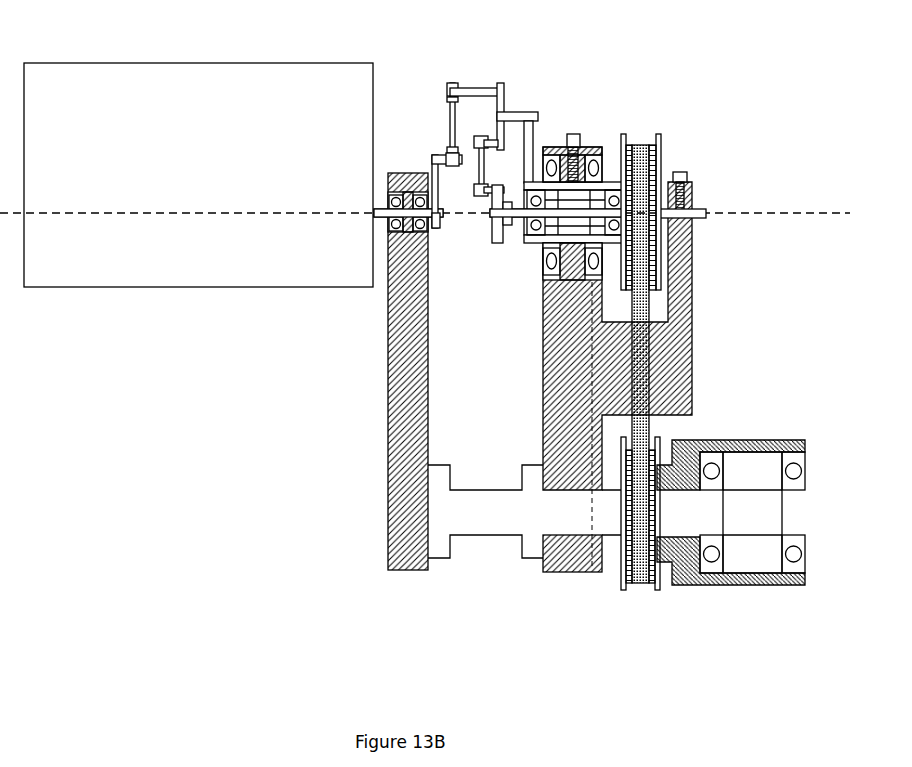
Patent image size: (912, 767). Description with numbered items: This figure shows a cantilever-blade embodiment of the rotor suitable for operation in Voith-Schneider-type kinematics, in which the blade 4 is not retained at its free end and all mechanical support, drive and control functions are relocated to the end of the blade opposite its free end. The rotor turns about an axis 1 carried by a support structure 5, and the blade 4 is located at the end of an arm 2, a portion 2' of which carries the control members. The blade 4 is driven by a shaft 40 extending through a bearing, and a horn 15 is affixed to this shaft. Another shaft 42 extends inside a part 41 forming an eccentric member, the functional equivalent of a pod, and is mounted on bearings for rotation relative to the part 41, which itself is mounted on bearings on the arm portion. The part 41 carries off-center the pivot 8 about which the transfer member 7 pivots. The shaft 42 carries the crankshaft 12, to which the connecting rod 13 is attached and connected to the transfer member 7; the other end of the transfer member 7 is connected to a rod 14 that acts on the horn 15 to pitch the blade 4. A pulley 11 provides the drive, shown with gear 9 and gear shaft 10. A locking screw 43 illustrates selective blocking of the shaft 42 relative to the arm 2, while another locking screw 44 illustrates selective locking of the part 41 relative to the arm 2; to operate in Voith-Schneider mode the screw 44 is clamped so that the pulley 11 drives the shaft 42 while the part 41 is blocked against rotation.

The axis 1 is at (460, 556).
The arm 2 is at (380, 371).
The second wheel hub 2' is at (591, 377).
The blade 4 is at (198, 203).
The support structure 5 is at (676, 549).
The transfer member 7 is at (513, 86).
The pivot 8 is at (543, 83).
The lower gear 9 is at (568, 543).
The gear shaft 10 is at (707, 364).
The pulley 11 is at (678, 181).
The crankshaft 12 is at (516, 241).
The connecting rod 13 is at (541, 140).
The rod 14 is at (425, 119).
The horn 15 is at (423, 175).
The shaft 40 is at (453, 243).
The part 41 is at (573, 148).
The shaft 42 is at (709, 258).
The locking screw 43 is at (703, 177).
The locking screw 44 is at (597, 147).